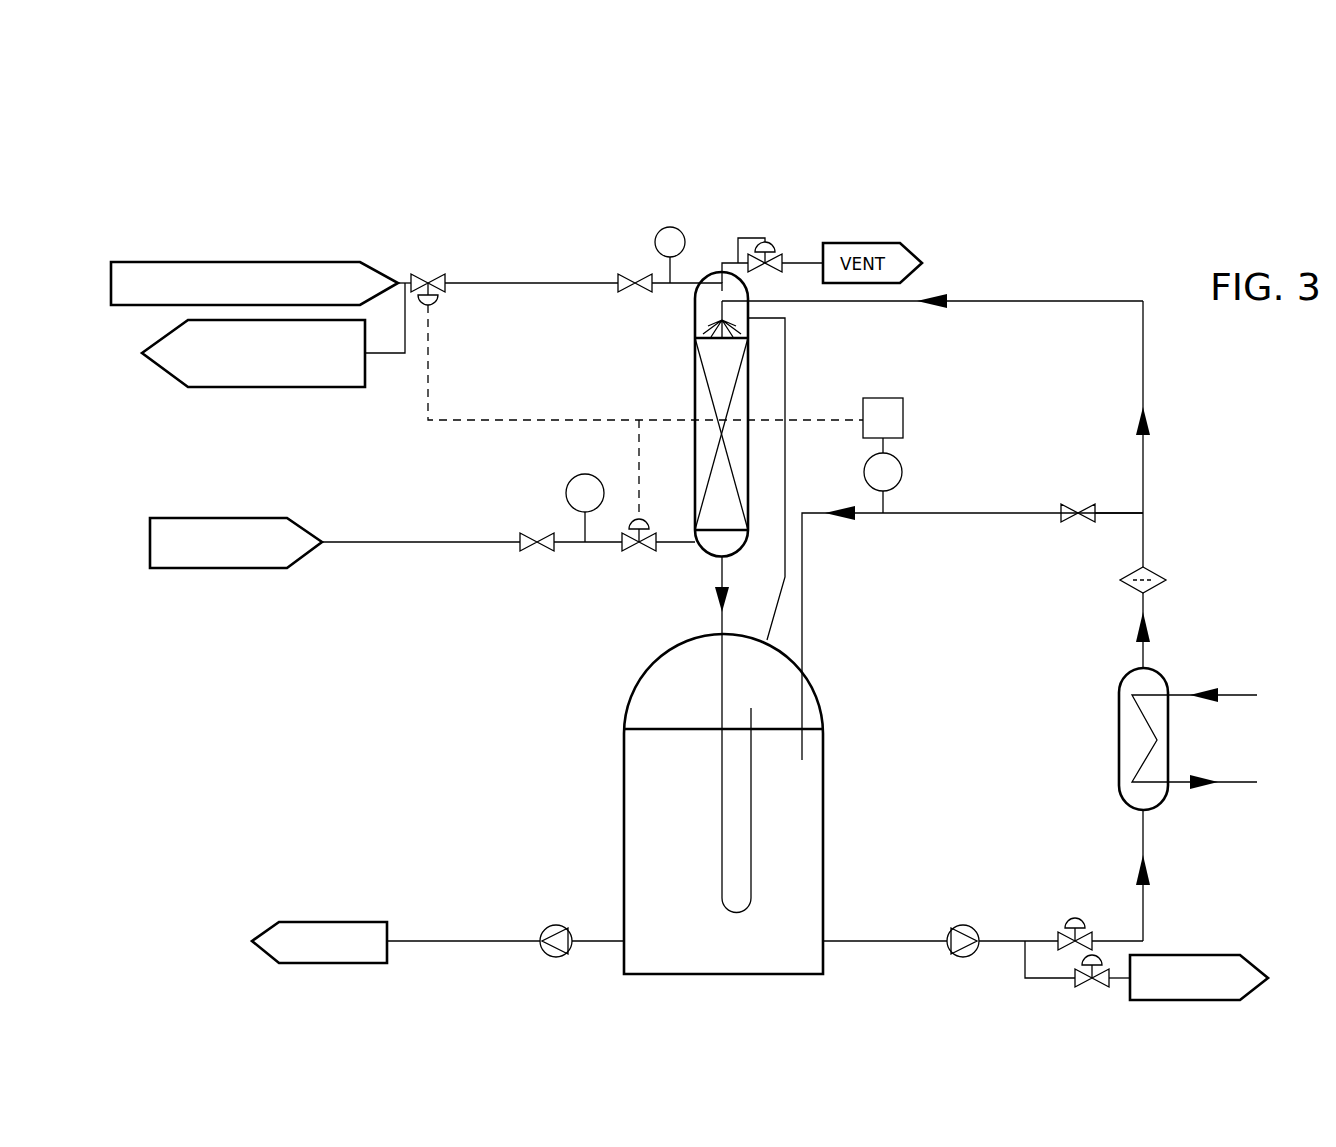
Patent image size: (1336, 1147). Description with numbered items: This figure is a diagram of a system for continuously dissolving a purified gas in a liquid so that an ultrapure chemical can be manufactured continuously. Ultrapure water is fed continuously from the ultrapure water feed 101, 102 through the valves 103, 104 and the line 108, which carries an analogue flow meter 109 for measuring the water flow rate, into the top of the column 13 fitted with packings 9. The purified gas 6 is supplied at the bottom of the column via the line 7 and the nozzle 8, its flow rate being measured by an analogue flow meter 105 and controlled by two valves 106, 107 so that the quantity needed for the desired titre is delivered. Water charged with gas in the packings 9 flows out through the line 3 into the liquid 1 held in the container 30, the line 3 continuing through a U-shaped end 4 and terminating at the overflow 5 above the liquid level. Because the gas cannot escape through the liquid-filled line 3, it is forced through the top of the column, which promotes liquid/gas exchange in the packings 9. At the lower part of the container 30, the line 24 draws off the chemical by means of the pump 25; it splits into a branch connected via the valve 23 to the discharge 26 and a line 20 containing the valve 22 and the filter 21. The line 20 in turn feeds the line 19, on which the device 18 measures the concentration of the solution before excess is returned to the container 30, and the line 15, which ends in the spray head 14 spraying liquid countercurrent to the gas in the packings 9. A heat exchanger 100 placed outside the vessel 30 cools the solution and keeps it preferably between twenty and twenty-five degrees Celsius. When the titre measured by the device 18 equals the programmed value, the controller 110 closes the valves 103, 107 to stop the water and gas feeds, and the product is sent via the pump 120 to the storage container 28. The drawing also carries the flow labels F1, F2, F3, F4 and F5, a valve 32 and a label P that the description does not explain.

The liquid 1 is at (750, 975).
The line 3 is at (722, 668).
The U-shaped end 4 is at (743, 906).
The overflow 5 is at (751, 730).
The purified gas 6 is at (218, 518).
The line 7 is at (478, 542).
The nozzle 8 is at (740, 548).
The packings 9 is at (695, 380).
The column 13 is at (750, 394).
The spray head 14 is at (712, 314).
The line 15 is at (1112, 301).
The concentration-measuring device 18 is at (902, 465).
The line 19 is at (1122, 513).
The line 20 is at (1143, 838).
The filter 21 is at (1160, 588).
The valve 22 is at (1075, 918).
The valve 23 is at (1092, 988).
The line 24 is at (880, 941).
The pump 25 is at (977, 902).
The discharge 26 is at (1197, 955).
The storage container 28 is at (333, 922).
The container 30 is at (823, 856).
The valve 32 is at (1077, 504).
The heat exchanger 100 is at (1119, 738).
The ultrapure water feed 101 is at (244, 262).
The ultrapure water feed 102 is at (284, 388).
The valve 103 is at (428, 274).
The valve 104 is at (635, 274).
The analogue flow meter 105 is at (570, 482).
The valve 106 is at (537, 551).
The valve 107 is at (639, 551).
The line 108 is at (686, 285).
The analogue flow meter 109 is at (681, 254).
The controller 110 is at (900, 398).
The pump 120 is at (556, 925).
The water flow line F1 is at (528, 283).
The gas flow line F2 is at (385, 542).
The flow line F3 is at (1143, 355).
The flow line F4 is at (990, 513).
The flow line F5 is at (458, 941).
The pressure P is at (768, 673).